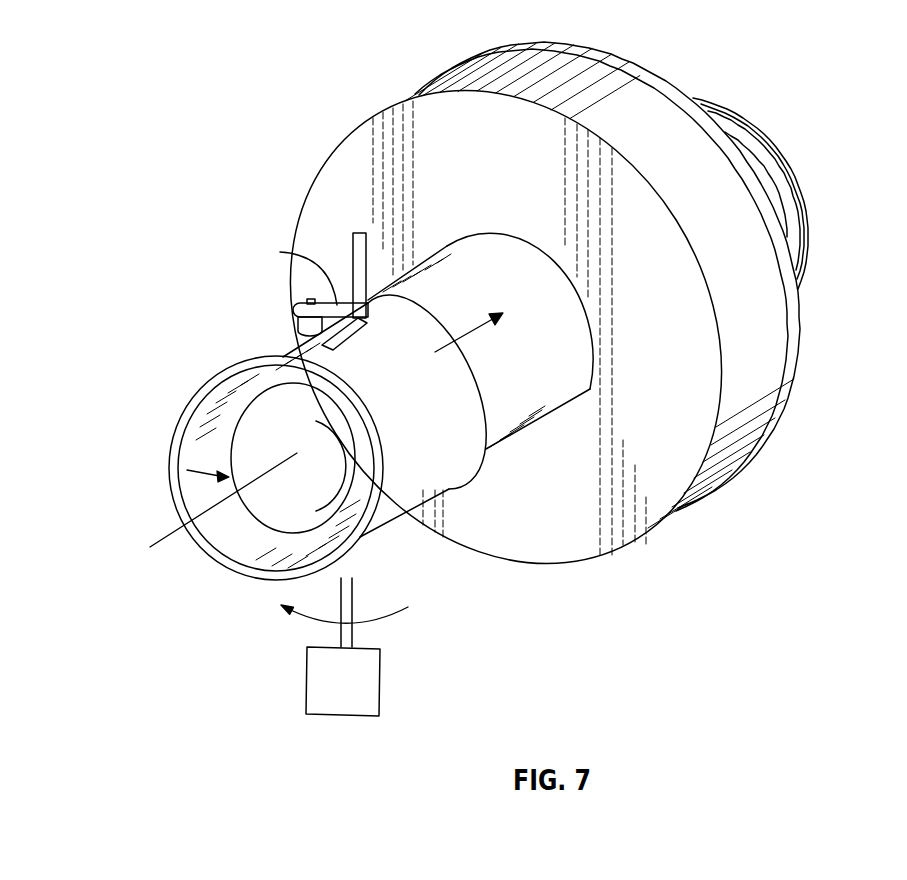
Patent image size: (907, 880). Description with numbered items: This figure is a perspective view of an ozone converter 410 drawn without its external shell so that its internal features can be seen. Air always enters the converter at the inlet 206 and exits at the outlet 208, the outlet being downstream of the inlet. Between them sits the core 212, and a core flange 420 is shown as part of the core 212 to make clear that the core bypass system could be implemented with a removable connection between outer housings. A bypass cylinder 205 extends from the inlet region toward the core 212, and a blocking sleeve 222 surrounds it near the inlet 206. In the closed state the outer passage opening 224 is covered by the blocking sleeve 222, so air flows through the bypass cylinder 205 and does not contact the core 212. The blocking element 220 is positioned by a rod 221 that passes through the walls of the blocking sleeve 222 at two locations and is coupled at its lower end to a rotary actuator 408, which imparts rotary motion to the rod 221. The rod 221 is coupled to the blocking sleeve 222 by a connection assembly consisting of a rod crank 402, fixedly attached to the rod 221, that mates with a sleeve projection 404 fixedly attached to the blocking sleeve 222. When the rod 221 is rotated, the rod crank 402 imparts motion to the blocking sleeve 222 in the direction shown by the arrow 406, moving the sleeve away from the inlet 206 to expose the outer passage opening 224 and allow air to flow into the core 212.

The ozone converter 410 is at (290, 45).
The core flange 420 is at (797, 312).
The core 212 is at (760, 425).
The outlet 208 is at (745, 120).
The bypass cylinder 205 is at (575, 318).
The blocking sleeve 222 is at (450, 467).
The inlet 206 is at (190, 415).
The outer passage opening 224 is at (195, 455).
The blocking element 220 is at (185, 530).
The rod crank 402 is at (345, 290).
The sleeve projection 404 is at (298, 320).
The arrow 406 is at (490, 335).
The rod 221 is at (348, 585).
The rotary actuator 408 is at (383, 684).